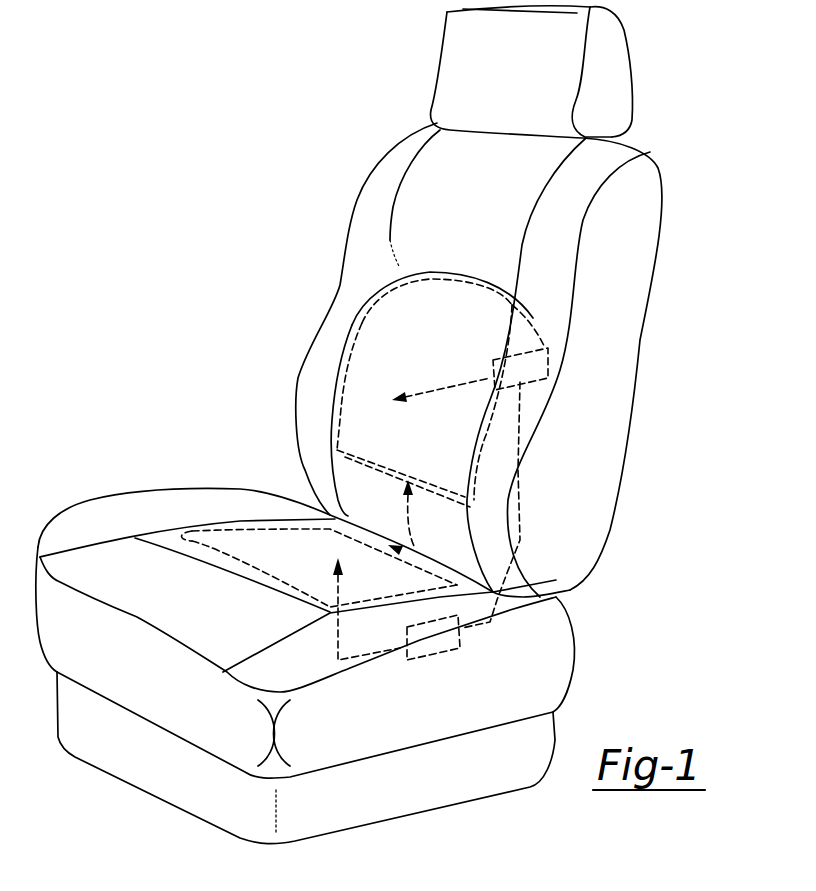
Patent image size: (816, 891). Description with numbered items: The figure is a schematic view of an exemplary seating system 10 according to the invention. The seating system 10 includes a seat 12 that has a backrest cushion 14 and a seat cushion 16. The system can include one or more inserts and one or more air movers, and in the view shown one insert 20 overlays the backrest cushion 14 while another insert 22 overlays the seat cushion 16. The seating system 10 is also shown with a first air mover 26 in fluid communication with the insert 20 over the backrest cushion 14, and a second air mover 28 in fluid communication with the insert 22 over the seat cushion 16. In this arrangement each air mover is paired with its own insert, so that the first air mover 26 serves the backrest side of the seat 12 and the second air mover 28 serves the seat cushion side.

The seating system 10 is at (201, 197).
The seat 12 is at (690, 218).
The backrest cushion 14 is at (645, 170).
The seat cushion 16 is at (560, 702).
The insert 20 is at (437, 275).
The insert 22 is at (237, 538).
The first air mover 26 is at (555, 368).
The second air mover 28 is at (462, 633).